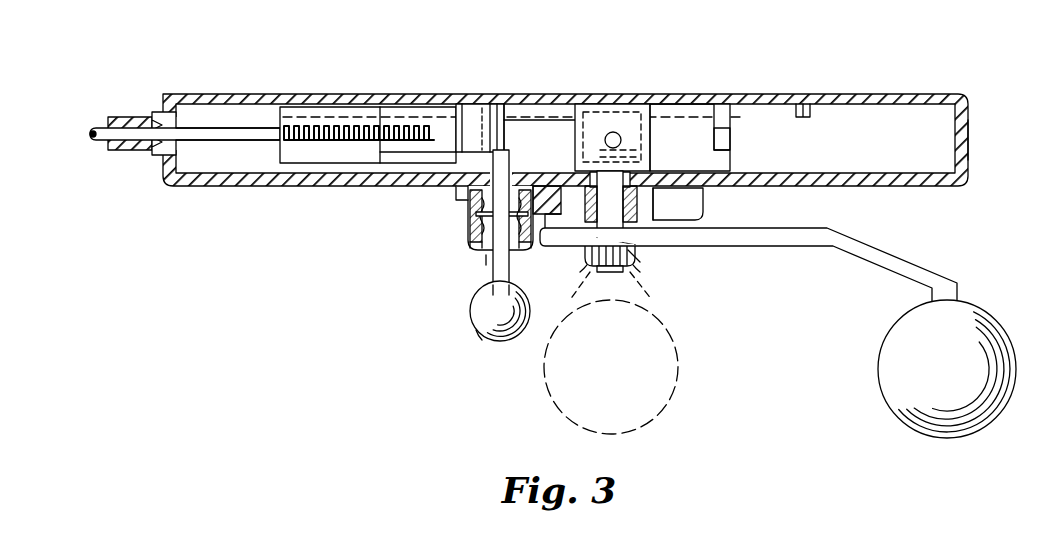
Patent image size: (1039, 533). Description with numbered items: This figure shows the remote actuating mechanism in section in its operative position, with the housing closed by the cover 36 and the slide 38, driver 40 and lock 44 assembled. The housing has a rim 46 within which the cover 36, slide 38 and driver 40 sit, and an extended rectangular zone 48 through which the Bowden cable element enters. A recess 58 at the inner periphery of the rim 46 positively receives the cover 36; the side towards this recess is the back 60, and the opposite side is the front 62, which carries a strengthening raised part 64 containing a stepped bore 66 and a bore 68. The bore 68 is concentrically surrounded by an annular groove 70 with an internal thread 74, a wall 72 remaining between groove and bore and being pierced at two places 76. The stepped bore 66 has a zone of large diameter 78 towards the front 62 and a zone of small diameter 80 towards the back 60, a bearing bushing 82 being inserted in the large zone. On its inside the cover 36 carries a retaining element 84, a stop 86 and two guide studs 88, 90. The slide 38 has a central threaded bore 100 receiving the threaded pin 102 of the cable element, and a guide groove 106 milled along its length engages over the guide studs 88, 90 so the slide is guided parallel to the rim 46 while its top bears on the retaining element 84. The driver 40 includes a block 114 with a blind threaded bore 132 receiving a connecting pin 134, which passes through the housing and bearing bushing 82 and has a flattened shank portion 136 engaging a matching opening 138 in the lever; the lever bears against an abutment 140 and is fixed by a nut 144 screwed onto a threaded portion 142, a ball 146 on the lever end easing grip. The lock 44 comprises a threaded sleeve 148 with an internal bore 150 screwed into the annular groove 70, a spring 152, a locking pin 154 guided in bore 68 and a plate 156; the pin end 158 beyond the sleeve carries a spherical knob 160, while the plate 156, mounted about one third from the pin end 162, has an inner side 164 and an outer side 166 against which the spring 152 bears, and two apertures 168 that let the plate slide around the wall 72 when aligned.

The cover 36 is at (907, 95).
The slide 38 is at (305, 160).
The driver 40 is at (663, 116).
The lock 44 is at (378, 288).
The rim 46 is at (969, 133).
The zone 48 is at (208, 167).
The recess 58 is at (163, 100).
The back 60 is at (787, 76).
The front 62 is at (187, 214).
The raised part 64 is at (705, 202).
The stepped bore 66 is at (657, 193).
The bore 68 is at (478, 104).
The annular groove 70 is at (466, 198).
The wall 72 is at (470, 225).
The internal thread 74 is at (528, 106).
The pierced places 76 is at (470, 232).
The zone of large diameter 78 is at (733, 248).
The zone of small diameter 80 is at (653, 165).
The bearing bushing 82 is at (596, 190).
The retaining element 84 is at (392, 124).
The stop 86 is at (722, 138).
The guide stud 88 is at (805, 102).
The guide stud 90 is at (604, 104).
The threaded bore 100 is at (308, 130).
The threaded pin 102 is at (330, 112).
The guide groove 106 is at (410, 115).
The block 114 is at (570, 104).
The threaded bore 132 is at (630, 106).
The connecting pin 134 is at (627, 222).
The flattened shank portion 136 is at (590, 285).
The opening 138 is at (568, 305).
The abutment 140 is at (560, 283).
The threaded portion 142 is at (644, 283).
The nut 144 is at (636, 258).
The ball 146 is at (997, 324).
The threaded sleeve 148 is at (478, 248).
The internal bore 150 is at (490, 262).
The spring 152 is at (486, 250).
The locking pin 154 is at (497, 104).
The plate 156 is at (492, 275).
The end 158 is at (476, 338).
The spherical knob 160 is at (490, 298).
The end 162 is at (508, 104).
The inner side 164 is at (470, 125).
The outer side 166 is at (509, 250).
The apertures 168 is at (478, 238).